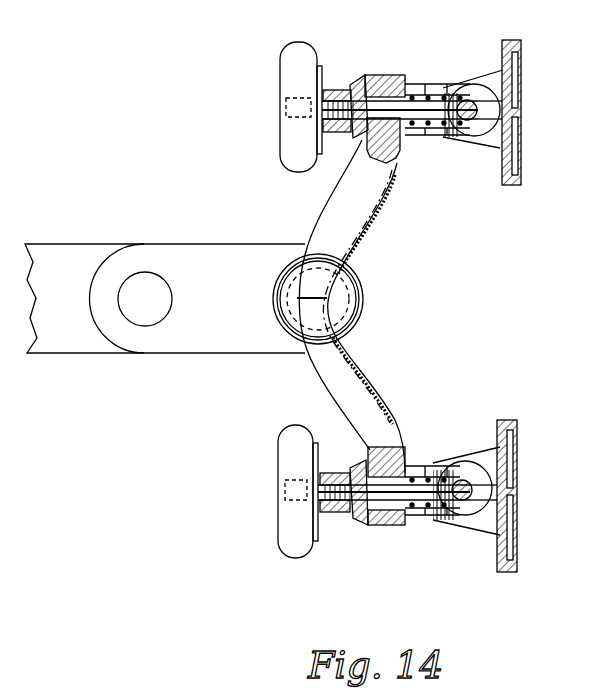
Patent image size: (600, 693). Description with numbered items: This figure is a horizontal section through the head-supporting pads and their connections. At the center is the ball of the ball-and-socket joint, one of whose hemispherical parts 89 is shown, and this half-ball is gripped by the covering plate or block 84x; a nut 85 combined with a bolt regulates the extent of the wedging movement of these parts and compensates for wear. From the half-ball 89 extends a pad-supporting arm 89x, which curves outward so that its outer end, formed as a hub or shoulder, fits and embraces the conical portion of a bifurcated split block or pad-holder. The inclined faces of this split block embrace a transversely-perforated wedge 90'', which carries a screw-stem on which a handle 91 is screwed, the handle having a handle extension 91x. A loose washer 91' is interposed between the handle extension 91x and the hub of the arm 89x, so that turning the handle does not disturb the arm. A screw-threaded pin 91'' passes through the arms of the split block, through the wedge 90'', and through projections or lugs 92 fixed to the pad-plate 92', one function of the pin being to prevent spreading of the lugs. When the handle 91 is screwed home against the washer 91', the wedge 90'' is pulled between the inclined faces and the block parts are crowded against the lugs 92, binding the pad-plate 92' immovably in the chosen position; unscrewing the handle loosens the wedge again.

The covering plate or block 84x is at (165, 298).
The nut 85 is at (145, 299).
The hemispherical part 89 is at (332, 318).
The pad-supporting arm 89x is at (350, 212).
The handle 91 is at (281, 300).
The handle extension 91x is at (340, 92).
The loose washer 91' is at (368, 307).
The screw-threaded pin 91'' is at (461, 308).
The transversely-perforated wedge 90'' is at (527, 285).
The projections or lugs 92 is at (526, 496).
The pad-plate 92' is at (533, 112).